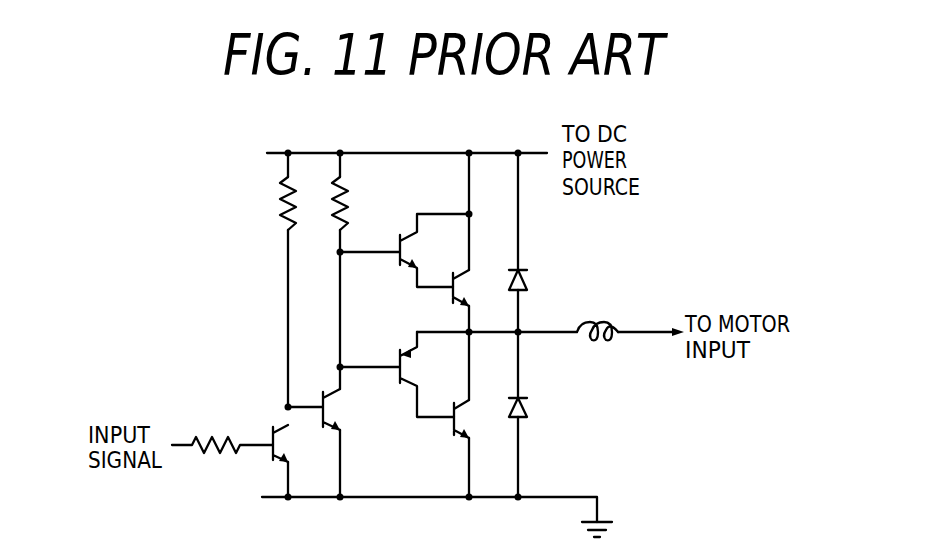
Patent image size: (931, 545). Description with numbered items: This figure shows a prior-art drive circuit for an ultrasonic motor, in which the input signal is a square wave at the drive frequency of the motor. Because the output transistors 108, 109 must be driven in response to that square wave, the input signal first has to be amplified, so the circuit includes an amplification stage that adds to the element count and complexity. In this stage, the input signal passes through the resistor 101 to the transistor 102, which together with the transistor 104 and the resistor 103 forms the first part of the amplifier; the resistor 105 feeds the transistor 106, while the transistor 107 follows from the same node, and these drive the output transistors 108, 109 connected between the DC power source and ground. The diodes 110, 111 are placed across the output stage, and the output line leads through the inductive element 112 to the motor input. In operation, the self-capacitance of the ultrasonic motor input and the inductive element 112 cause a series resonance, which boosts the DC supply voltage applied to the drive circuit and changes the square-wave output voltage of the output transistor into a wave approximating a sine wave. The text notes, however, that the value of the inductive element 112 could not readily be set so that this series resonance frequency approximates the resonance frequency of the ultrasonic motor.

The resistor 101 is at (210, 432).
The transistor 102 is at (276, 422).
The resistor 103 is at (282, 207).
The transistor 104 is at (323, 388).
The resistor 105 is at (352, 204).
The transistor 106 is at (397, 247).
The transistor 107 is at (398, 352).
The output transistor 108 is at (450, 298).
The output transistor 109 is at (452, 402).
The diode 110 is at (526, 282).
The diode 111 is at (527, 408).
The inductive element 112 is at (610, 322).